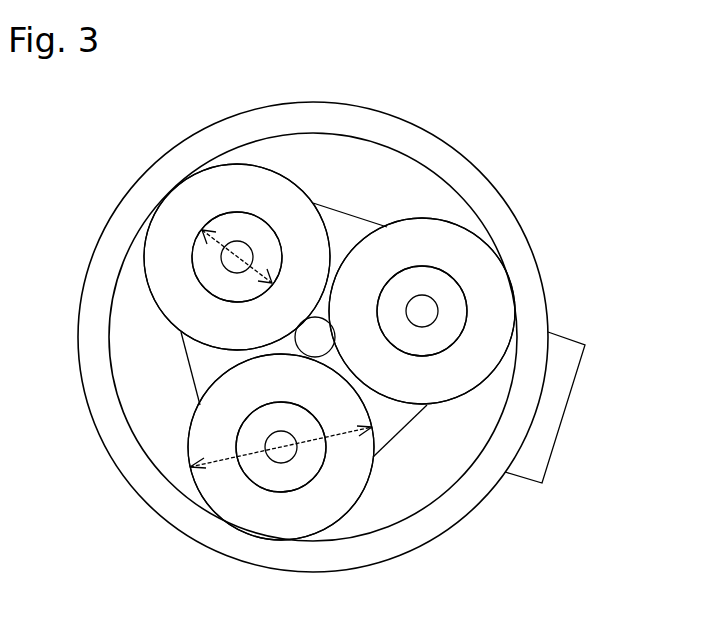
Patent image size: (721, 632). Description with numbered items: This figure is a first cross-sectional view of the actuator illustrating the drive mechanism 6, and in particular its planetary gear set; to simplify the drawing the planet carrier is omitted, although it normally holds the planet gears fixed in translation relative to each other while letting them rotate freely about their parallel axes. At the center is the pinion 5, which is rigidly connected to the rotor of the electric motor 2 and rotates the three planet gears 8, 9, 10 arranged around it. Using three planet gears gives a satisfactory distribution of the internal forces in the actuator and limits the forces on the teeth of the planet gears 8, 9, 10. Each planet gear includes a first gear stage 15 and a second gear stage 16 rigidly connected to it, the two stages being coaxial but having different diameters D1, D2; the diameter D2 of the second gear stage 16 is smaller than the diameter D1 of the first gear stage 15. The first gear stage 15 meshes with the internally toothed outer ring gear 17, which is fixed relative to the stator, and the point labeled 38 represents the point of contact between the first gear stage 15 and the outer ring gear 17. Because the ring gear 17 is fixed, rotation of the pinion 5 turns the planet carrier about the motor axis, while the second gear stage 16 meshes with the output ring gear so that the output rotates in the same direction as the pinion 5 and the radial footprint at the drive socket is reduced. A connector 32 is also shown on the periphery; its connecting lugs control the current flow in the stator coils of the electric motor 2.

The electric motor 2 is at (342, 342).
The pinion 5 is at (320, 330).
The drive mechanism 6 is at (447, 125).
The planet gear 8 is at (187, 213).
The planet gear 9 is at (487, 325).
The planet gear 10 is at (333, 492).
The first gear stage 15 is at (142, 278).
The second gear stage 16 is at (193, 287).
The outer ring gear 17 is at (255, 140).
The connector 32 is at (563, 360).
The point of contact 38 is at (170, 190).
The diameter of the first gear stage D1 is at (190, 467).
The diameter of the second gear stage D2 is at (240, 252).